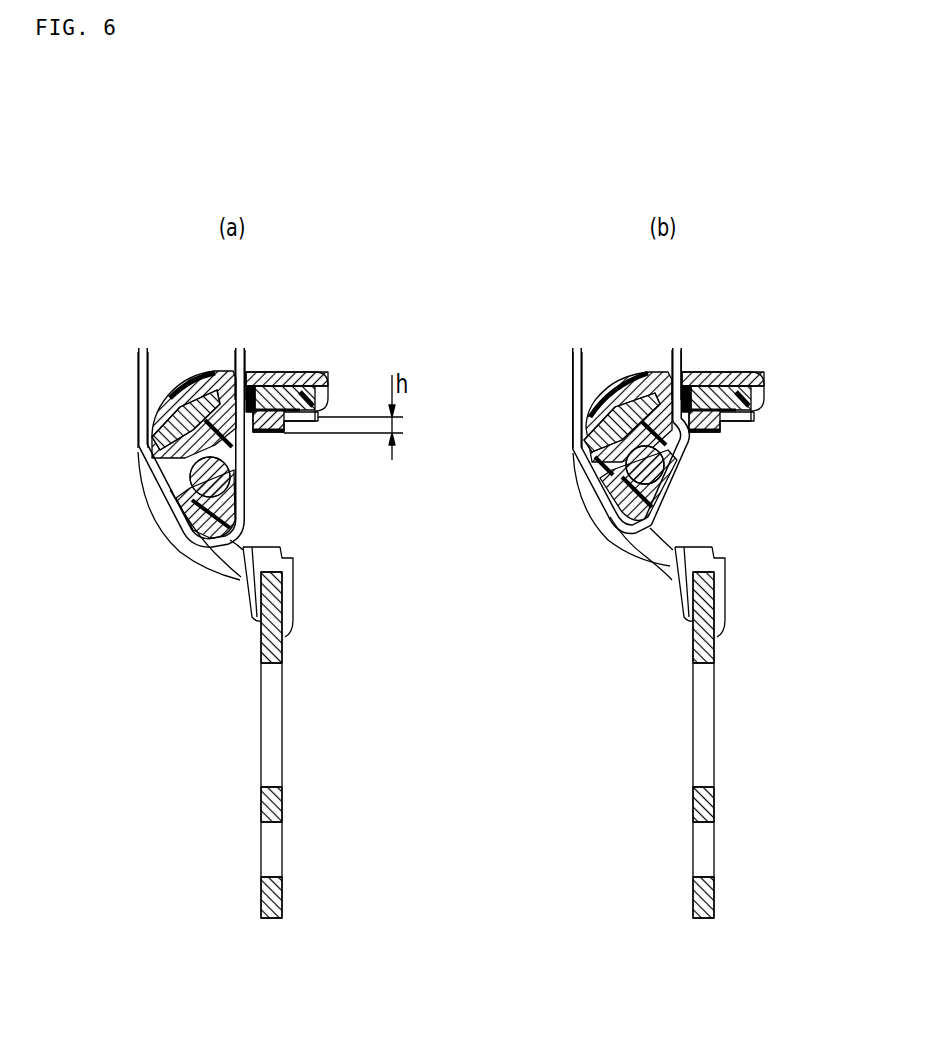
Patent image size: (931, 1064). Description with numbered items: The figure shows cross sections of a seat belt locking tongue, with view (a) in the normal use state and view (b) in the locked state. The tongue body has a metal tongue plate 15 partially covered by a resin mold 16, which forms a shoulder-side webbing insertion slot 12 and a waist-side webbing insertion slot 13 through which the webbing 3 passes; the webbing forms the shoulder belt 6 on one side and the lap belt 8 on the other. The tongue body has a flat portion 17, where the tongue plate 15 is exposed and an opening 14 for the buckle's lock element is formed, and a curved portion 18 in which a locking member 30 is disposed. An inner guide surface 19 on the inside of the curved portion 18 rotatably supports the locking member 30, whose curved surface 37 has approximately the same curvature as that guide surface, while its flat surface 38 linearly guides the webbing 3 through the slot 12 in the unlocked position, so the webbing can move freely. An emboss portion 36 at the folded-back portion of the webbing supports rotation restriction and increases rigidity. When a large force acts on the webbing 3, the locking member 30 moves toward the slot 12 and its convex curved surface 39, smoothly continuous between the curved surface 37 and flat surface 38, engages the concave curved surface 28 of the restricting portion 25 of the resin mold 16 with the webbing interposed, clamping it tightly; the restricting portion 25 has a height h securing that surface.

The webbing 3 is at (134, 403).
The shoulder belt 6 is at (242, 358).
The lap belt 8 is at (140, 368).
The shoulder-side webbing insertion slot 12 is at (244, 400).
The waist-side webbing insertion slot 13 is at (240, 568).
The opening 14 is at (272, 787).
The tongue plate 15 is at (270, 647).
The resin mold 16 is at (294, 373).
The flat portion 17 is at (250, 803).
The curved portion 18 is at (186, 372).
The inner guide surface 19 is at (224, 466).
The restricting portion 25 is at (284, 432).
The concave curved surface 28 is at (256, 436).
The locking member 30 is at (190, 490).
The emboss portion 36 is at (204, 523).
The curved surface 37 is at (176, 428).
The flat surface 38 is at (242, 480).
The convex curved surface 39 is at (222, 372).